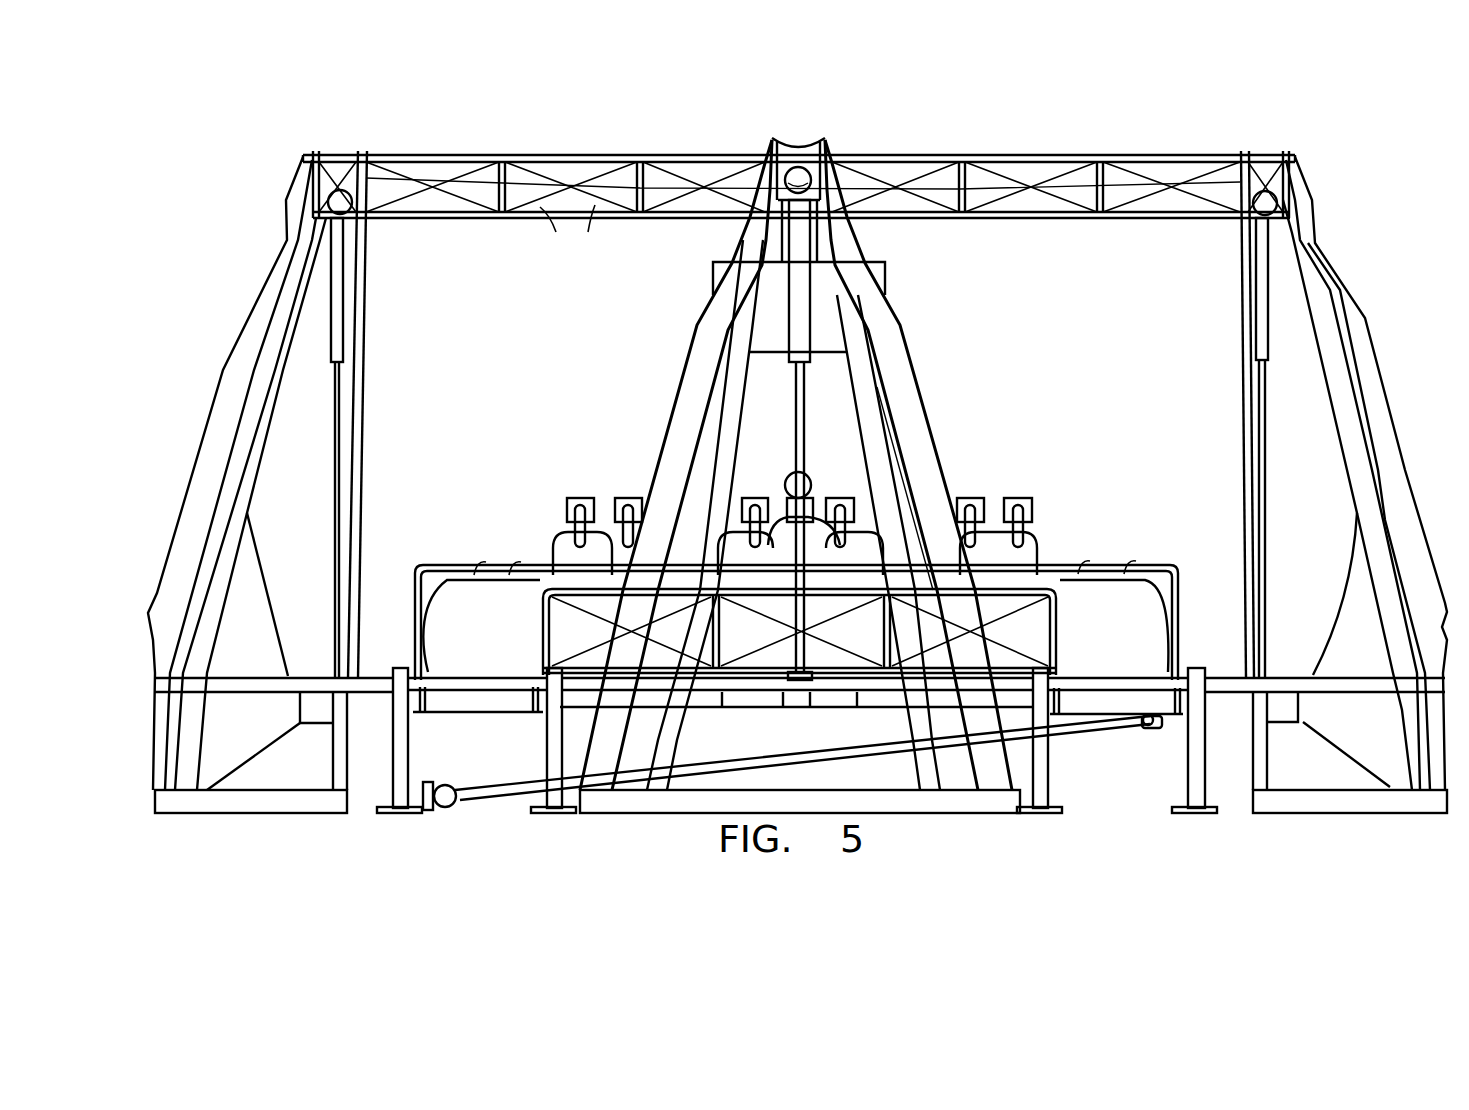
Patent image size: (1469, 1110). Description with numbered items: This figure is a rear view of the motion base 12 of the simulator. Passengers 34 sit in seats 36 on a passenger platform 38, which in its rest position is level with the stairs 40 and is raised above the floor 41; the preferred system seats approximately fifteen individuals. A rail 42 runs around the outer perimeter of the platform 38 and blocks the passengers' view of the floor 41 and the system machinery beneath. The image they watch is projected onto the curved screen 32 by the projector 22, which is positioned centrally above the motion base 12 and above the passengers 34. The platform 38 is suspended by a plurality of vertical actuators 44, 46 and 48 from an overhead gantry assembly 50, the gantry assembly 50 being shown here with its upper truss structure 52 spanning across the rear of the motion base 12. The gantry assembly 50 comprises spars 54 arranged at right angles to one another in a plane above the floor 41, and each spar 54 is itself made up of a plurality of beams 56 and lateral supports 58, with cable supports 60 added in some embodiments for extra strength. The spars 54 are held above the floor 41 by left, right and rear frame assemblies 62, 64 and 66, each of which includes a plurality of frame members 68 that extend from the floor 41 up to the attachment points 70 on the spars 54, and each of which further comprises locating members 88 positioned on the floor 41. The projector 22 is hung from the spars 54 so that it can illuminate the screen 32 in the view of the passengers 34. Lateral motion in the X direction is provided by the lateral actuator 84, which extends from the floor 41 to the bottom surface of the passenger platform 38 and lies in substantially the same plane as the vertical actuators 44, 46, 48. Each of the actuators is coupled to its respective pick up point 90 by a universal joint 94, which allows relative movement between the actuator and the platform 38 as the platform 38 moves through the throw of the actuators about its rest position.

The motion base 12 is at (1246, 110).
The projector 22 is at (832, 283).
The screen 32 is at (1000, 240).
The passengers 34 is at (812, 481).
The seats 36 is at (1030, 540).
The platform 38 is at (1160, 673).
The stairs 40 is at (467, 708).
The floor 41 is at (1128, 813).
The rail 42 is at (1112, 560).
The vertical actuator 44 is at (331, 296).
The vertical actuator 46 is at (800, 296).
The vertical actuator 48 is at (1260, 331).
The gantry assembly 50 is at (596, 126).
The truss beam 52 is at (485, 143).
The spars 54 is at (848, 141).
The beams 56 is at (720, 150).
The lateral supports 58 is at (790, 152).
The cable supports 60 is at (567, 228).
The left frame assembly 62 is at (1373, 311).
The right frame assembly 64 is at (203, 380).
The rear frame assembly 66 is at (926, 362).
The frame members 68 is at (350, 412).
The attachment points 70 is at (307, 150).
The lateral actuator 84 is at (506, 782).
The locating members 88 is at (258, 782).
The pick up points 90 is at (800, 706).
The universal joints 94 is at (446, 783).